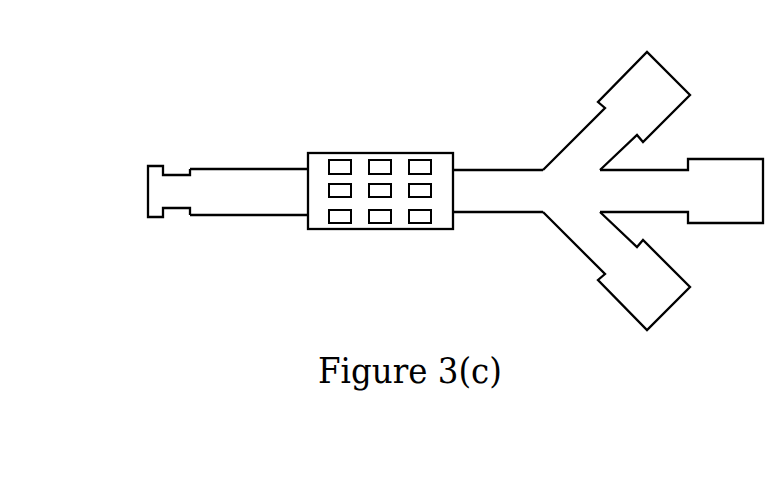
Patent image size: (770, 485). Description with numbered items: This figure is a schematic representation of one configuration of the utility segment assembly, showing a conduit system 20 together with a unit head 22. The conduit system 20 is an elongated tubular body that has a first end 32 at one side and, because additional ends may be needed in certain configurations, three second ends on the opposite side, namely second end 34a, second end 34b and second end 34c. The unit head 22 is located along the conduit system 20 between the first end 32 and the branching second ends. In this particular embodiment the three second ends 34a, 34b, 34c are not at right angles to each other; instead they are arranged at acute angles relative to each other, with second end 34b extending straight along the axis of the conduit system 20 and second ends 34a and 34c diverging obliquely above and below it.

The conduit system 20 is at (248, 158).
The unit head 22 is at (378, 142).
The first end 32 is at (138, 191).
The second end 34a is at (683, 64).
The second end 34b is at (733, 148).
The second end 34c is at (683, 320).